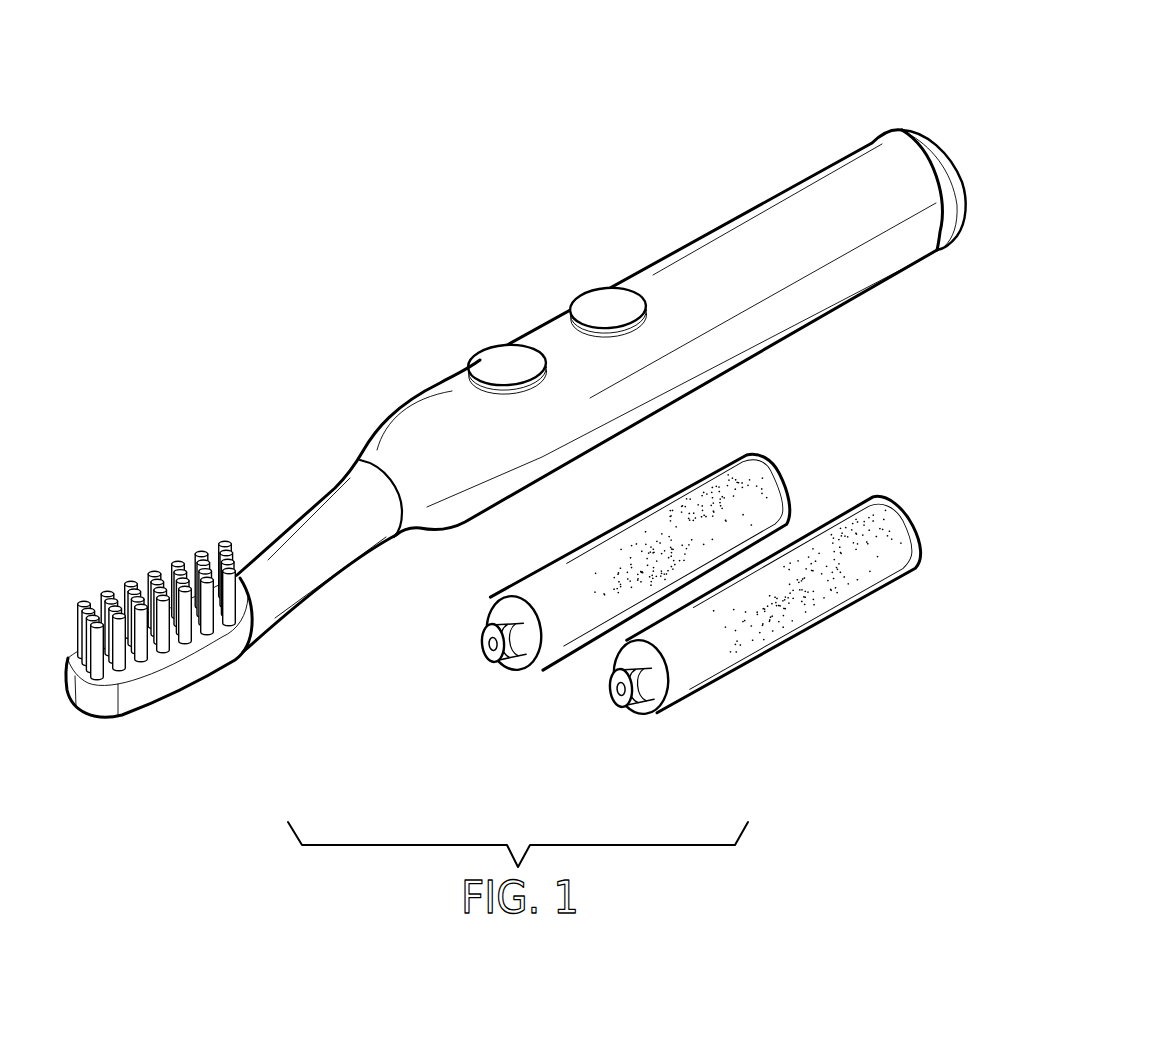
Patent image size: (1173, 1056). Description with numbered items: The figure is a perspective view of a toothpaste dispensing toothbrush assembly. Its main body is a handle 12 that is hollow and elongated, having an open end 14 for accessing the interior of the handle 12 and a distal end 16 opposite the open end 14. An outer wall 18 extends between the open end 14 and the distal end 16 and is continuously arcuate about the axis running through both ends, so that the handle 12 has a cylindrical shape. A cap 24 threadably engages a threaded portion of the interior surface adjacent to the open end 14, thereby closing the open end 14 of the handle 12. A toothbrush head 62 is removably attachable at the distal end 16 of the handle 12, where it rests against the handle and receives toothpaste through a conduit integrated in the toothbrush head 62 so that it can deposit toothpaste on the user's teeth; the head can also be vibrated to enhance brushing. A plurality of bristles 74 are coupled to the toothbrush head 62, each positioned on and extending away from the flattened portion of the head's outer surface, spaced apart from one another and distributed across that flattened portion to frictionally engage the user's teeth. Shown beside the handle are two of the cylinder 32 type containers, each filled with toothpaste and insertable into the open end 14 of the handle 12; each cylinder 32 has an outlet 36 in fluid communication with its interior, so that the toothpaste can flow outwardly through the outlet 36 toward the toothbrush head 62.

The handle 12 is at (705, 229).
The open end 14 is at (900, 143).
The cap 24 is at (947, 154).
The outer wall 18 is at (806, 302).
The distal end 16 is at (326, 490).
The toothbrush head 62 is at (249, 662).
The bristles 74 is at (95, 617).
The cylinder 32 is at (787, 478).
The outlet 36 is at (617, 697).